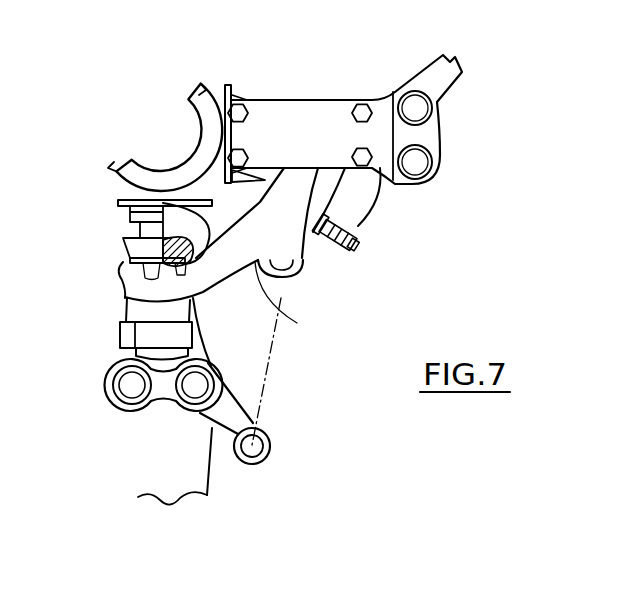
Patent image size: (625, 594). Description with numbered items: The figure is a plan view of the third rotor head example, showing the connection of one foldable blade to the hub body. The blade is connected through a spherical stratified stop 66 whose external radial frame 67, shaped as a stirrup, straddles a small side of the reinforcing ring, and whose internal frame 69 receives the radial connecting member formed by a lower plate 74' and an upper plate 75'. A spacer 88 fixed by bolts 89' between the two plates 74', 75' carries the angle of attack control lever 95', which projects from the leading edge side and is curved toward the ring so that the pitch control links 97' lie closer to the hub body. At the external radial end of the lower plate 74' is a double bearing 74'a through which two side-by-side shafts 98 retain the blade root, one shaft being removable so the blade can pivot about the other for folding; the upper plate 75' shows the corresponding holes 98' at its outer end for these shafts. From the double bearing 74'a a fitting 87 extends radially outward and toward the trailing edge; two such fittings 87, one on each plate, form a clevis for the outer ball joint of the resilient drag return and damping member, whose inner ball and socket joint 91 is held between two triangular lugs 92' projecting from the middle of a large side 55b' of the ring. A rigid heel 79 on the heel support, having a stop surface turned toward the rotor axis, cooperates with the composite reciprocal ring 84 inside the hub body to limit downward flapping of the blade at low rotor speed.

The reciprocal ring 84 is at (207, 118).
The rigid heel 79 is at (225, 87).
The spherical stratified stop 66 is at (263, 97).
The upper plate 75' is at (347, 110).
The bolts 89' is at (315, 99).
The holes 98' is at (460, 129).
The angle of attack control lever 95' is at (380, 200).
The pitch control links 97' is at (372, 234).
The internal frame 69 is at (238, 222).
The external radial frame 67 is at (180, 266).
The ball and socket joint 91 is at (303, 268).
The lugs 92' is at (313, 290).
The large side 55b' is at (306, 305).
The lower plate 74' is at (129, 383).
The spacer 88 is at (128, 332).
The double bearing 74'a is at (152, 419).
The shafts 98 is at (163, 417).
The fittings 87 is at (241, 421).